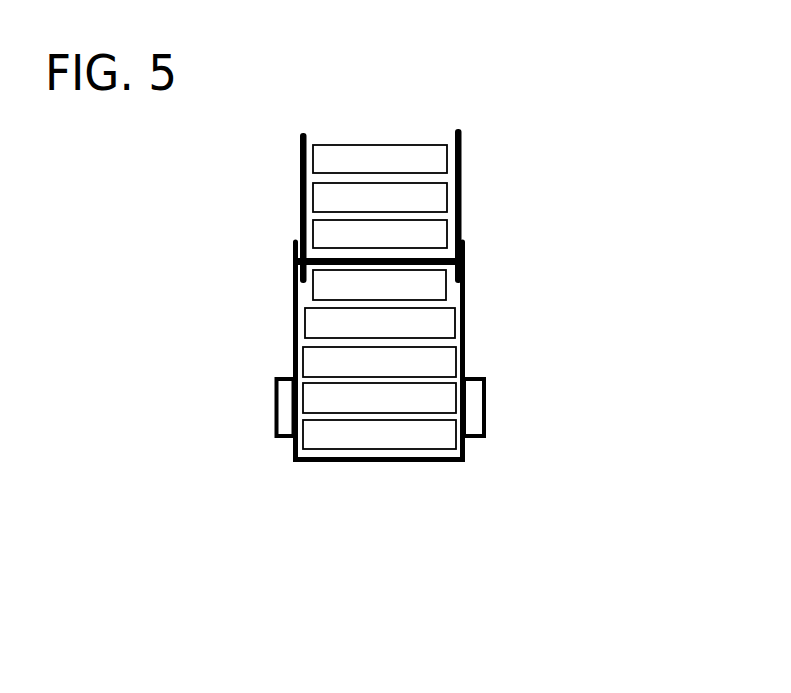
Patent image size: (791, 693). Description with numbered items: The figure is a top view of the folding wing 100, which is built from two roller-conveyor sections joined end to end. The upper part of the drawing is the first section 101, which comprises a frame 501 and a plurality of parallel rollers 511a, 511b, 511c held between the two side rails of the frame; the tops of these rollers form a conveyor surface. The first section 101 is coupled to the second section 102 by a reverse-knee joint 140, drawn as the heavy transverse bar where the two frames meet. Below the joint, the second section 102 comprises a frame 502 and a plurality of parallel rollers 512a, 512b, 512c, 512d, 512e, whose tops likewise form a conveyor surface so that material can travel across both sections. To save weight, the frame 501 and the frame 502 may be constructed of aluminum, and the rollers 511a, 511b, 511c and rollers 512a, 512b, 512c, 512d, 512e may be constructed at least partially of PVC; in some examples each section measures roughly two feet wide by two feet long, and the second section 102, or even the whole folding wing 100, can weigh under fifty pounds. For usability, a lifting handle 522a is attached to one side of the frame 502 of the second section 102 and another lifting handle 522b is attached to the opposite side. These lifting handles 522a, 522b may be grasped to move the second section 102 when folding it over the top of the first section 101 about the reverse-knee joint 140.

The folding wing 100 is at (531, 61).
The first section 101 is at (479, 181).
The second section 102 is at (493, 302).
The reverse-knee joint 140 is at (295, 261).
The frame 501 is at (300, 158).
The frame 502 is at (293, 362).
The roller 511a is at (380, 234).
The roller 511b is at (380, 197).
The roller 511c is at (380, 159).
The roller 512a is at (379, 285).
The roller 512b is at (380, 323).
The roller 512c is at (379, 362).
The roller 512d is at (379, 398).
The roller 512e is at (379, 434).
The lifting handle 522a is at (275, 413).
The lifting handle 522b is at (486, 413).